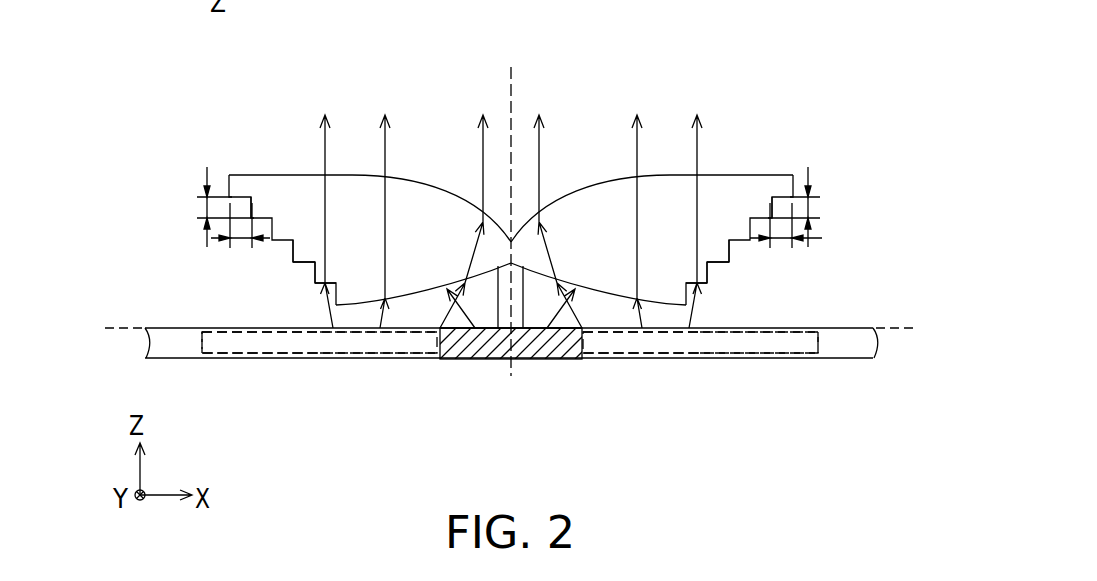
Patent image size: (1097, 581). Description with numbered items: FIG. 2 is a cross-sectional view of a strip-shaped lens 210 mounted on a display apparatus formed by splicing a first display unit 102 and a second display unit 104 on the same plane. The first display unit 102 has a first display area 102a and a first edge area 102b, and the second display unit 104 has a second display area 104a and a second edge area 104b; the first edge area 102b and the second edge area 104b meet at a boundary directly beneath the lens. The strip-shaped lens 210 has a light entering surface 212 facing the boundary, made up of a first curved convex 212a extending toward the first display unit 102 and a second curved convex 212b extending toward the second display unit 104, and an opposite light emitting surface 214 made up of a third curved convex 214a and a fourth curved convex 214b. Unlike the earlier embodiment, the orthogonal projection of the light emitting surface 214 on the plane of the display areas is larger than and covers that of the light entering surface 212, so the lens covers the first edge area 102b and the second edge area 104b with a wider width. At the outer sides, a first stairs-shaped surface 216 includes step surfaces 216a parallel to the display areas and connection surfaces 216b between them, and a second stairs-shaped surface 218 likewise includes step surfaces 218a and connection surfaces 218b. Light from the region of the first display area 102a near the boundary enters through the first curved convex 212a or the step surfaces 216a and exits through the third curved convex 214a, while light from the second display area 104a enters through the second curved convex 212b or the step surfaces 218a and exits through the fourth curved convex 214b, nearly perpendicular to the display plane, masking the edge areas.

The first display unit 102 is at (447, 428).
The first display area 102a is at (340, 350).
The first edge area 102b is at (438, 349).
The second display unit 104 is at (683, 428).
The second display area 104a is at (682, 350).
The second edge area 104b is at (584, 349).
The strip-shaped lens 210 is at (541, 163).
The light entering surface 212 is at (566, 428).
The first curved convex 212a is at (480, 331).
The second curved convex 212b is at (542, 331).
The light emitting surface 214 is at (511, 152).
The third curved convex 214a is at (436, 189).
The fourth curved convex 214b is at (578, 185).
The first stairs-shaped surface 216 is at (212, 263).
The step surfaces 216a is at (316, 290).
The connection surfaces 216b is at (309, 268).
The second stairs-shaped surface 218 is at (808, 265).
The step surfaces 218a is at (706, 290).
The connection surfaces 218b is at (713, 268).